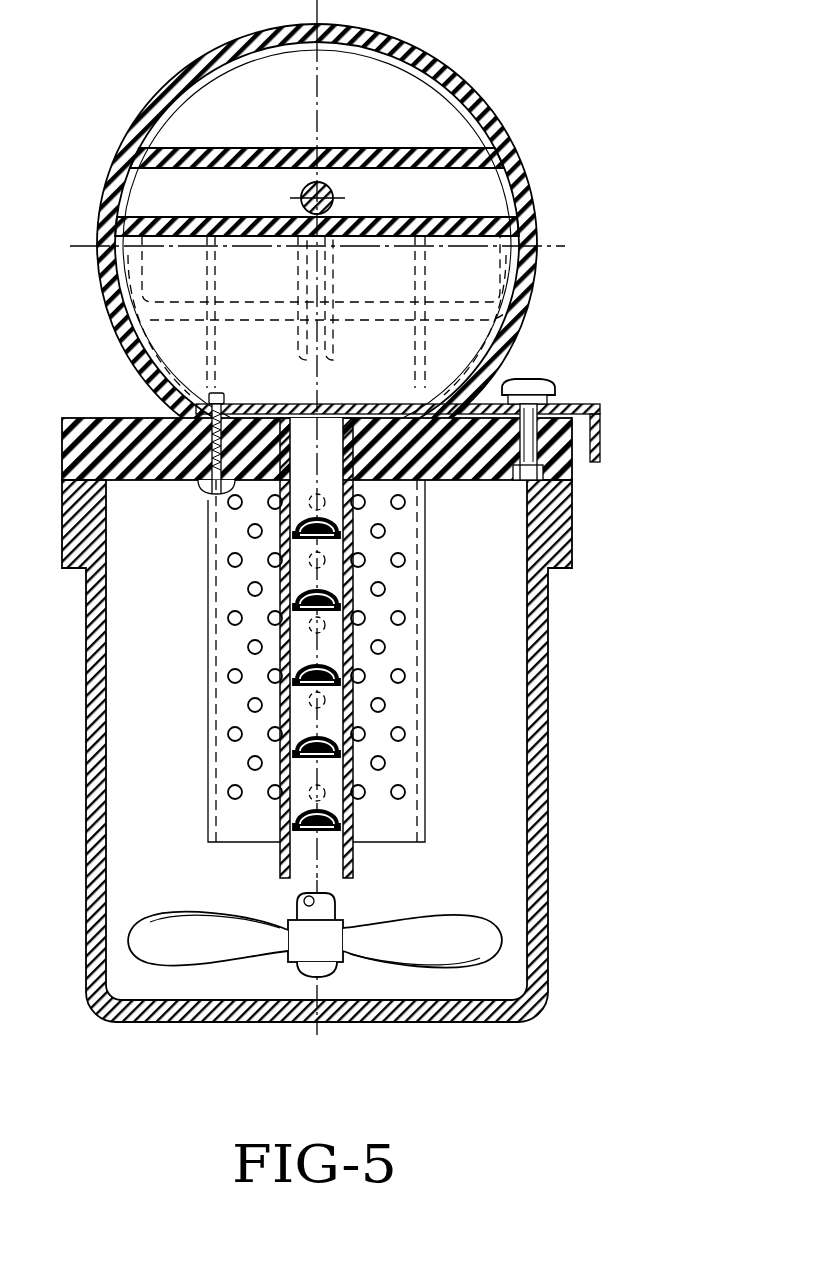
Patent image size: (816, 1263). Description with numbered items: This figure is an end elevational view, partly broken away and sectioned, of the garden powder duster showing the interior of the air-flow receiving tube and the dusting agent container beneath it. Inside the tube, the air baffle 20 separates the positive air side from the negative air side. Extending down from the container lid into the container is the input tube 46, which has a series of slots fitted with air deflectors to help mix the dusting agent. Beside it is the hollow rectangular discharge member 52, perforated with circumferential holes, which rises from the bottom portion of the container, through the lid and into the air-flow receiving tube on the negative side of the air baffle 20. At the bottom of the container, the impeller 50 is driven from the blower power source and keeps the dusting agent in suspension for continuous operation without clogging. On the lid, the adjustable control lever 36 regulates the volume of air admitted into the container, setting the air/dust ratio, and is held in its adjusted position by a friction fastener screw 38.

The air baffle 20 is at (210, 140).
The adjustable control lever 36 is at (603, 414).
The screw 38 is at (530, 378).
The input tube 46 is at (280, 858).
The impeller 50 is at (455, 948).
The discharge member 52 is at (398, 842).